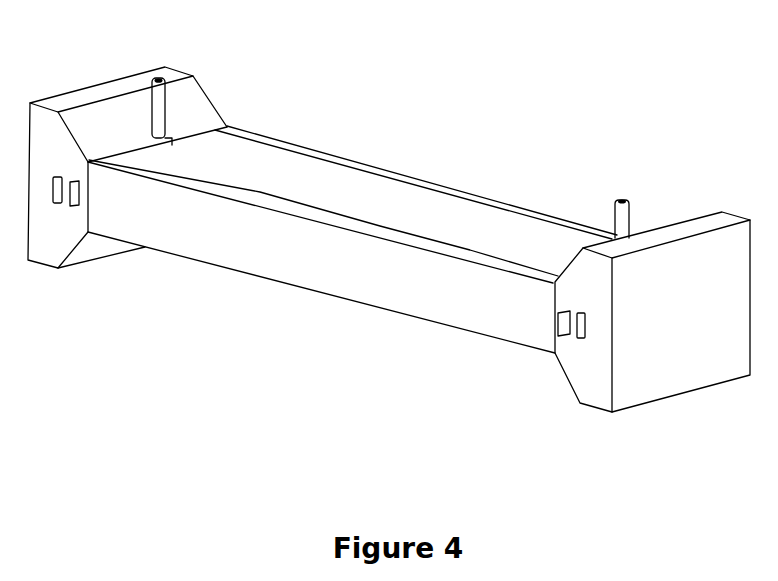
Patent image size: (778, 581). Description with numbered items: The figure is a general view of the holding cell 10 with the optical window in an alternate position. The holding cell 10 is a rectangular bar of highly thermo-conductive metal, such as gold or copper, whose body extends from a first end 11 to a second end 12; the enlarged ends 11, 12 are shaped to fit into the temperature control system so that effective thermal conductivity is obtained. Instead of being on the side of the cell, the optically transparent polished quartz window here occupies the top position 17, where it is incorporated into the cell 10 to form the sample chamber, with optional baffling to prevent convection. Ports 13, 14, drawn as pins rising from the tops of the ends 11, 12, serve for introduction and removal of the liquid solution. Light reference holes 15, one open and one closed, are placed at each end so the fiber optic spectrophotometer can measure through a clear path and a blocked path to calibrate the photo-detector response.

The holding cell 10 is at (260, 316).
The first end 11 is at (100, 127).
The second end 12 is at (686, 253).
The port 13 is at (158, 103).
The port 14 is at (620, 214).
The light reference holes 15 is at (73, 205).
The optical window position 17 is at (452, 217).